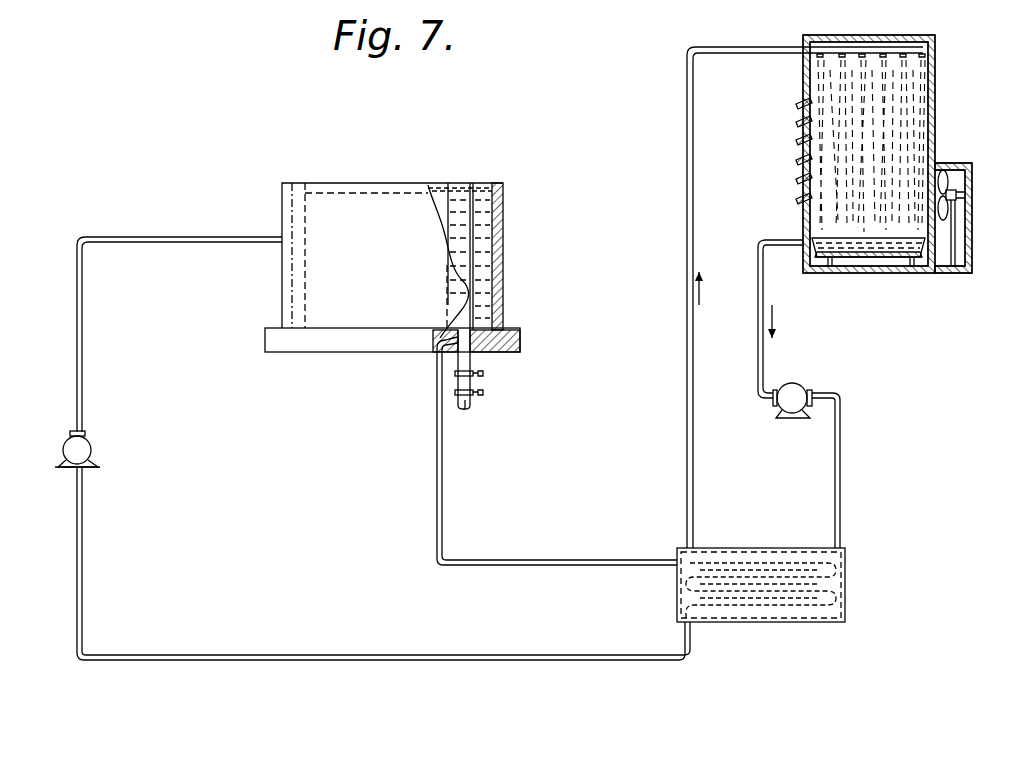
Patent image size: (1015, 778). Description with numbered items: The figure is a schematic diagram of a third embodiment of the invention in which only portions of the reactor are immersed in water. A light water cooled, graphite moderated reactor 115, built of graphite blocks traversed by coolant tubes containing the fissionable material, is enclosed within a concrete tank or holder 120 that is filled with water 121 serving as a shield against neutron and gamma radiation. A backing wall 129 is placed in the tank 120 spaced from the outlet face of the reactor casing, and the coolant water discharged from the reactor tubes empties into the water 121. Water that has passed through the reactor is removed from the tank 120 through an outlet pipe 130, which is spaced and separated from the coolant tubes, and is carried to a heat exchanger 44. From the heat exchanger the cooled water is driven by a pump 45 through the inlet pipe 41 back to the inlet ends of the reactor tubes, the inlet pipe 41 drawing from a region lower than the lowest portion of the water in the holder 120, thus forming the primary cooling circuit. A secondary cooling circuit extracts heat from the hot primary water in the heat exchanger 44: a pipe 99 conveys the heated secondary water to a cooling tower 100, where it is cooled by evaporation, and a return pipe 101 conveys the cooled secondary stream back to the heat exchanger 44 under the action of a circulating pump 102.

The reactor 115 is at (373, 215).
The concrete tank 120 is at (503, 275).
The water 121 is at (487, 202).
The backing wall 129 is at (460, 322).
The outlet pipe 130 is at (436, 427).
The inlet pipe 41 is at (82, 325).
The pump 45 is at (92, 450).
The heat exchanger 44 is at (847, 583).
The pipe 99 is at (695, 457).
The return pipe 101 is at (764, 300).
The circulating pump 102 is at (797, 393).
The cooling tower 100 is at (937, 126).